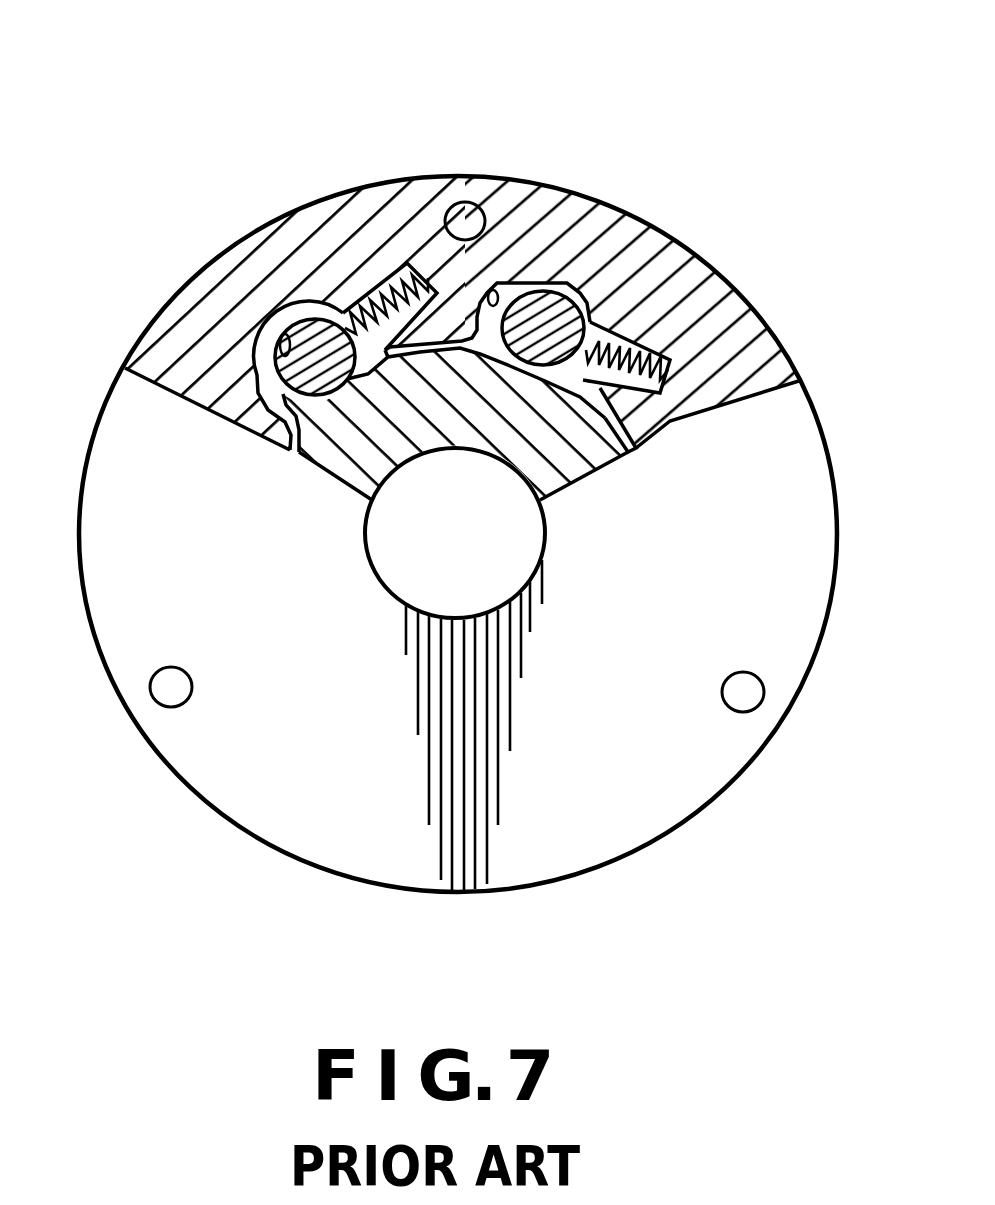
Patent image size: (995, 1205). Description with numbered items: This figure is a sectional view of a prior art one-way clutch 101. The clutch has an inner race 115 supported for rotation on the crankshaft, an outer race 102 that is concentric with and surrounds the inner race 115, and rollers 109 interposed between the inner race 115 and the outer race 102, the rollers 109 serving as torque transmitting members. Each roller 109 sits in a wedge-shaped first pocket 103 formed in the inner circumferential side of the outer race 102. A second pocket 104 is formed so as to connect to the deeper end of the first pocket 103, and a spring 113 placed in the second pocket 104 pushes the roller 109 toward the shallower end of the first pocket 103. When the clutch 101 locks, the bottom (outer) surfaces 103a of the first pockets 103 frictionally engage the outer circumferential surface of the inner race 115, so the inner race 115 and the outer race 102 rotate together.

The one-way clutch 101 is at (448, 162).
The outer race 102 is at (242, 238).
The first pocket 103 is at (510, 288).
The bottom surface of the first pocket 103a is at (273, 347).
The second pocket 104 is at (375, 270).
The roller 109 is at (588, 292).
The spring 113 is at (653, 347).
The inner race 115 is at (640, 418).